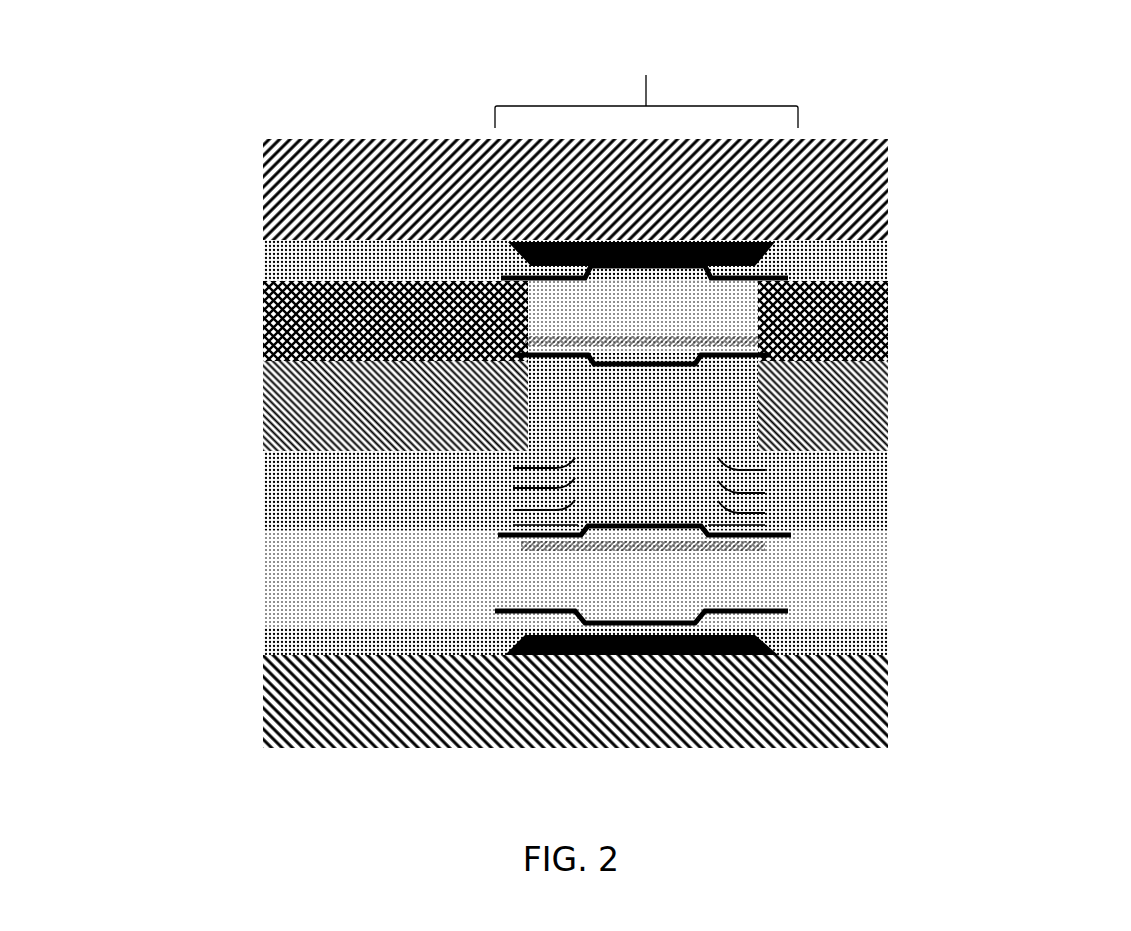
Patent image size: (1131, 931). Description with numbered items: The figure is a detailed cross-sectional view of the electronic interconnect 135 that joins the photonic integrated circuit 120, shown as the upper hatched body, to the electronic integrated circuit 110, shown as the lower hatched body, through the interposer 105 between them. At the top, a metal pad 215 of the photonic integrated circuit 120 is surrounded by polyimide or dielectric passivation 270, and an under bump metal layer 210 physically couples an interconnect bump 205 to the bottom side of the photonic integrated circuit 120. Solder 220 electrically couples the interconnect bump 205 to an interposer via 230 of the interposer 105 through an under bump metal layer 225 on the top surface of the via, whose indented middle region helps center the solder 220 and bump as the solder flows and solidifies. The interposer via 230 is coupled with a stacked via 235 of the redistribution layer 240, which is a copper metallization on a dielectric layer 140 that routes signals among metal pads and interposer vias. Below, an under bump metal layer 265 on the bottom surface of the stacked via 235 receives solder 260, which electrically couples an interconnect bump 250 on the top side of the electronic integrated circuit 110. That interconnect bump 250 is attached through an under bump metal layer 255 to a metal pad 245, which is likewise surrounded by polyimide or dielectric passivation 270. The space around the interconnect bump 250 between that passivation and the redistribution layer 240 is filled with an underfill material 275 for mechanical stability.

The interposer 105 is at (258, 418).
The electronic integrated circuit 110 is at (405, 740).
The photonic integrated circuit 120 is at (348, 130).
The electronic interconnect 135 is at (646, 85).
The dielectric layer 140 is at (258, 303).
The interconnect bump 205 is at (723, 317).
The under bump metal layer 210 is at (780, 270).
The metal pad 215 is at (770, 243).
The solder 220 is at (258, 352).
The under bump metal layer 225 is at (740, 336).
The interposer via 230 is at (720, 425).
The stacked via 235 is at (590, 471).
The redistribution layer 240 is at (258, 478).
The metal pad 245 is at (770, 640).
The interconnect bump 250 is at (745, 565).
The under bump metal layer 255 is at (780, 603).
The solder 260 is at (510, 537).
The under bump metal layer 265 is at (783, 527).
The polyimide or dielectric passivation 270 is at (258, 250).
The underfill material 275 is at (258, 555).